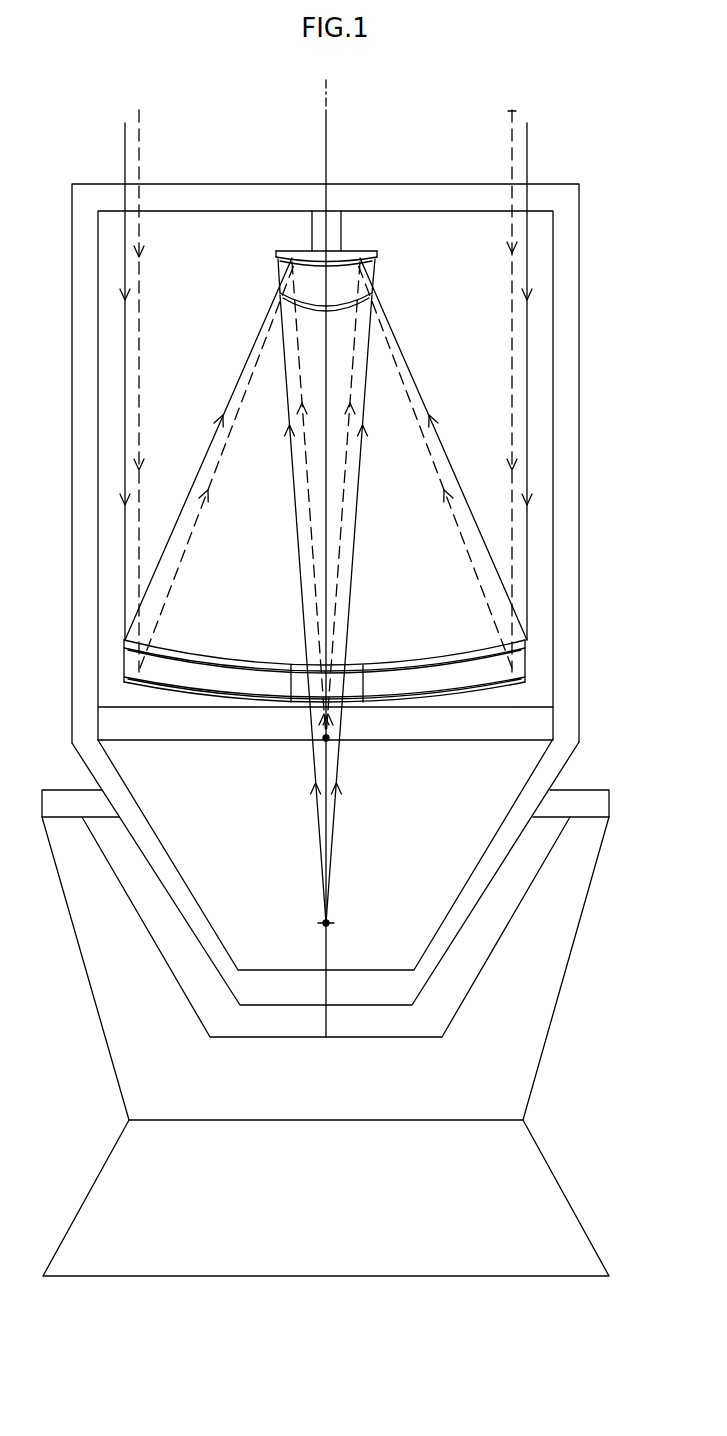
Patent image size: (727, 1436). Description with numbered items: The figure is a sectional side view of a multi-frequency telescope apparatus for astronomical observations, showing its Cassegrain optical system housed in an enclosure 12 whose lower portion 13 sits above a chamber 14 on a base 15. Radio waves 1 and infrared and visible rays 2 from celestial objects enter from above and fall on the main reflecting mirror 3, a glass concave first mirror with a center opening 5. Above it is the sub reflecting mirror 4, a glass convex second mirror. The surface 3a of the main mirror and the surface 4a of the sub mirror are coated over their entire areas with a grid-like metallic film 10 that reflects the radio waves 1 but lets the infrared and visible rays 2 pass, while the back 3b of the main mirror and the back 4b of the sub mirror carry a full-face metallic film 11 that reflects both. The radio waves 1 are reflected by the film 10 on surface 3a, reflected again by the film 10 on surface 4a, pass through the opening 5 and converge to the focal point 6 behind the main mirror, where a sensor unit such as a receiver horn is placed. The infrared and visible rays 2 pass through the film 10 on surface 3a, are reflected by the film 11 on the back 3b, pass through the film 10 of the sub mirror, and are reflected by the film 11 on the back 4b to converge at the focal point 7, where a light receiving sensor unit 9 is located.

The radio waves 1 is at (527, 155).
The infrared and visible rays 2 is at (512, 113).
The main reflecting mirror 3 is at (527, 659).
The surface of main reflecting mirror 3a is at (447, 662).
The back of main reflecting mirror 3b is at (448, 688).
The sub reflecting mirror 4 is at (278, 272).
The surface of sub reflecting mirror 4a is at (284, 305).
The back of sub reflecting mirror 4b is at (276, 252).
The center opening 5 is at (361, 664).
The focal point of the radio waves 6 is at (330, 923).
The focal point of the infrared and visible rays 7 is at (326, 738).
The sensor unit 9 is at (326, 738).
The grid-like metallic film 10 is at (407, 668).
The full-face metallic film 11 is at (341, 251).
The housing 12 is at (358, 184).
The bottom plate of housing 13 is at (490, 742).
The chamber 14 is at (363, 817).
The base 15 is at (455, 1276).